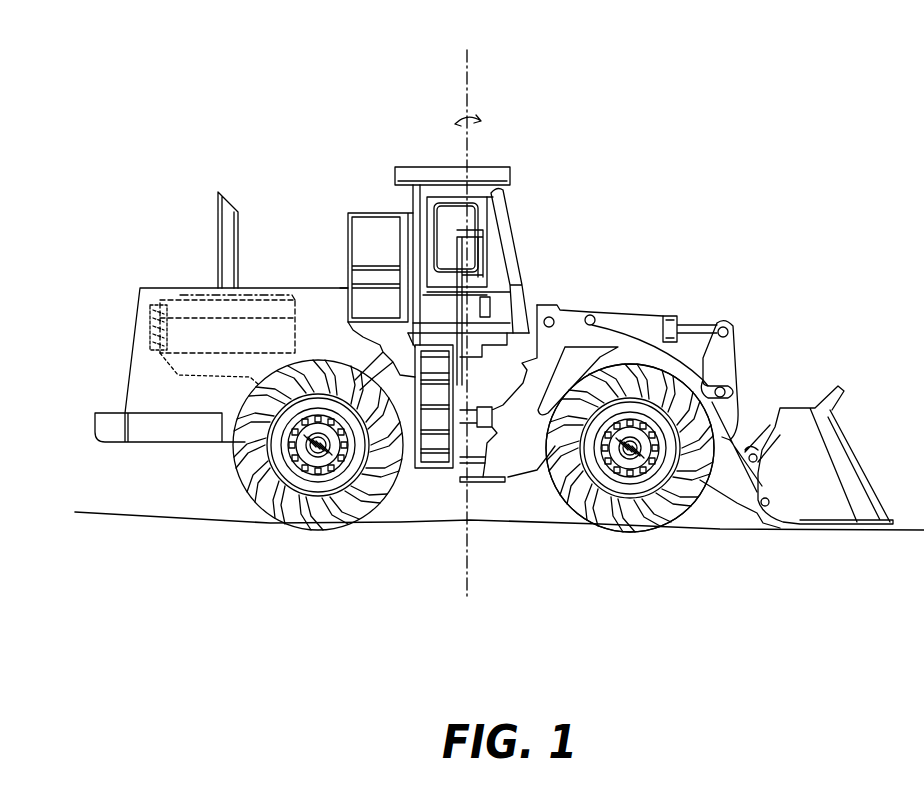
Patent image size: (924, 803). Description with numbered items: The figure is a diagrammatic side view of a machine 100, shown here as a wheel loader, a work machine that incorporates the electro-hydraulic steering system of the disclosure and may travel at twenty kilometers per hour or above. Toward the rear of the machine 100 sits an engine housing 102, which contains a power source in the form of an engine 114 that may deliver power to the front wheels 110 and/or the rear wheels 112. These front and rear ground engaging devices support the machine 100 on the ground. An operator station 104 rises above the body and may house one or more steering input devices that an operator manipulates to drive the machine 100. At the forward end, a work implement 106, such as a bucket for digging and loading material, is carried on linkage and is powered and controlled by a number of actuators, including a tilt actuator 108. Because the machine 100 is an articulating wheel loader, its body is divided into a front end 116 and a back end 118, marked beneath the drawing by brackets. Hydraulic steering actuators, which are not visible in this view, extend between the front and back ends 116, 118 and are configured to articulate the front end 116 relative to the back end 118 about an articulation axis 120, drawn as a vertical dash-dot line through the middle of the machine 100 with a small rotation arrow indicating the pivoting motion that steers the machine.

The machine 100 is at (523, 103).
The engine housing 102 is at (155, 288).
The operator station 104 is at (513, 212).
The work implement 106 is at (843, 408).
The tilt actuator 108 is at (668, 315).
The front wheels 110 is at (712, 530).
The rear wheels 112 is at (397, 530).
The engine 114 is at (135, 315).
The front end 116 is at (478, 600).
The back end 118 is at (95, 600).
The articulation axis 120 is at (465, 97).